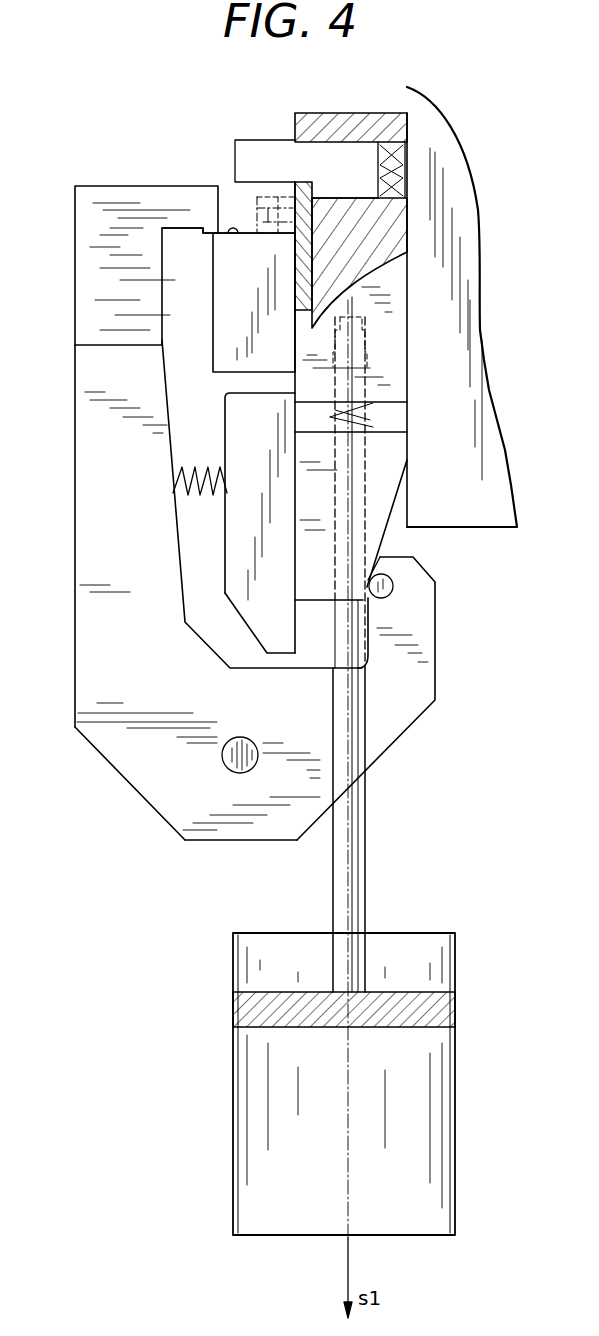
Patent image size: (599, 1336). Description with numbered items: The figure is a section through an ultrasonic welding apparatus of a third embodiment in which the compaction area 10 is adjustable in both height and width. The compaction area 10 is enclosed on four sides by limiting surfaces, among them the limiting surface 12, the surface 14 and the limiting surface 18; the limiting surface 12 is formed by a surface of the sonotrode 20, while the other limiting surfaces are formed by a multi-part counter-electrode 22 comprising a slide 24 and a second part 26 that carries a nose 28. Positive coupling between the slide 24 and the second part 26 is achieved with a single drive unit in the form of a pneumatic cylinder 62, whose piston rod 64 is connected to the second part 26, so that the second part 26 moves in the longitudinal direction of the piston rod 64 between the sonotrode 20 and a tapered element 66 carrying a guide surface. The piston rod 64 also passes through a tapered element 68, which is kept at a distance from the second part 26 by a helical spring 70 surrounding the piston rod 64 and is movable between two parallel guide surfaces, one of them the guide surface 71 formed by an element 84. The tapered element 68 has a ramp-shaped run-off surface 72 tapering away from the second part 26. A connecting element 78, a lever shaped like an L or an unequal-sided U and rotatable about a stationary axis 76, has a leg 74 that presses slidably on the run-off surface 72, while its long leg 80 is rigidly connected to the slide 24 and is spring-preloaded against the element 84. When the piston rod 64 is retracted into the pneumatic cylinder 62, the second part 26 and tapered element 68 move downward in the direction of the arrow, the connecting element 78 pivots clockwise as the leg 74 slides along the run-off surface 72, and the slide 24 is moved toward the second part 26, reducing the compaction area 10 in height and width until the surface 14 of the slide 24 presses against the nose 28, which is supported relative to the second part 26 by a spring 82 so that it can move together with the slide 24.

The compaction area 10 is at (279, 221).
The limiting surface 12 is at (225, 237).
The limiting surface 14 is at (222, 208).
The limiting surface 18 is at (246, 184).
The sonotrode 20 is at (232, 305).
The counter-electrode 22 is at (148, 141).
The slide 24 is at (95, 186).
The second part 26 is at (385, 338).
The nose 28 is at (318, 153).
The pneumatic cylinder 62 is at (440, 1132).
The piston rod 64 is at (372, 905).
The tapered element 66 is at (462, 233).
The tapered element 68 is at (375, 472).
The helical spring 70 is at (370, 410).
The guide surface 71 is at (293, 588).
The run-off surface 72 is at (385, 540).
The leg 74 is at (415, 678).
The stationary axis 76 is at (237, 760).
The connecting element 78 is at (150, 760).
The long leg 80 is at (88, 486).
The spring 82 is at (405, 151).
The element 84 is at (235, 538).